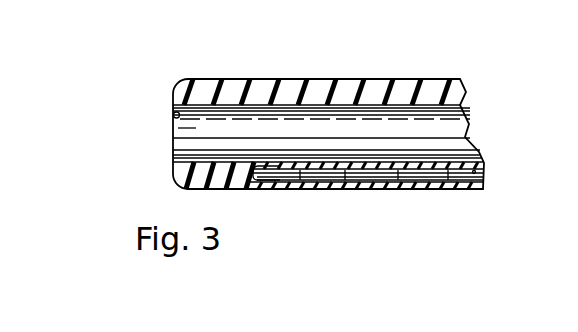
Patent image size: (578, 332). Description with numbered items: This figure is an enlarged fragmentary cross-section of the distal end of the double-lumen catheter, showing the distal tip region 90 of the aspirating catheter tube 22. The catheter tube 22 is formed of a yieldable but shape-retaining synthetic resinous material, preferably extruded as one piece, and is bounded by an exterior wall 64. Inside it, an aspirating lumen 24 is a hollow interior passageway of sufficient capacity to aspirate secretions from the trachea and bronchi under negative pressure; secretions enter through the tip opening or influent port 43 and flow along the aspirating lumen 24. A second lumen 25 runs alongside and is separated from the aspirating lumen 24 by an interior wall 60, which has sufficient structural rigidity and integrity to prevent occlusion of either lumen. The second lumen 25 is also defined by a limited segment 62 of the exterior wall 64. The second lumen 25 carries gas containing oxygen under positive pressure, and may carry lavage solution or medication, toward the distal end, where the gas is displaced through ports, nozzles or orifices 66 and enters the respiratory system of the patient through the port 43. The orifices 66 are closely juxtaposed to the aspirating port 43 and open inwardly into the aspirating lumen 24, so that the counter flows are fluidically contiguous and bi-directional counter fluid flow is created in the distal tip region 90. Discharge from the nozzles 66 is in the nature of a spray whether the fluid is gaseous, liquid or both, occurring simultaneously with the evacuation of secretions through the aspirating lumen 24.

The distal tip region 90 is at (191, 79).
The aspirating catheter tube 22 is at (297, 73).
The exterior wall 64 is at (370, 96).
The aspirating lumen 24 is at (420, 80).
The influent port 43 is at (173, 121).
The interior wall 60 is at (441, 162).
The second lumen 25 is at (483, 172).
The orifices 66 is at (412, 187).
The limited segment 62 is at (447, 184).